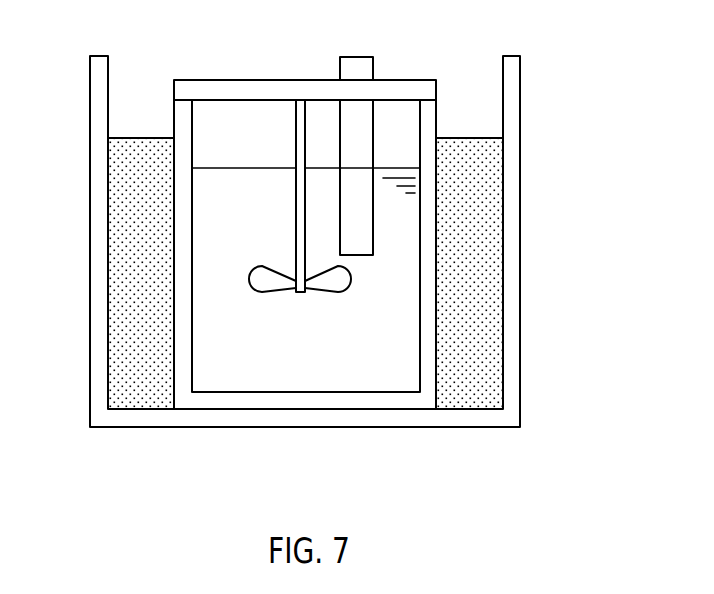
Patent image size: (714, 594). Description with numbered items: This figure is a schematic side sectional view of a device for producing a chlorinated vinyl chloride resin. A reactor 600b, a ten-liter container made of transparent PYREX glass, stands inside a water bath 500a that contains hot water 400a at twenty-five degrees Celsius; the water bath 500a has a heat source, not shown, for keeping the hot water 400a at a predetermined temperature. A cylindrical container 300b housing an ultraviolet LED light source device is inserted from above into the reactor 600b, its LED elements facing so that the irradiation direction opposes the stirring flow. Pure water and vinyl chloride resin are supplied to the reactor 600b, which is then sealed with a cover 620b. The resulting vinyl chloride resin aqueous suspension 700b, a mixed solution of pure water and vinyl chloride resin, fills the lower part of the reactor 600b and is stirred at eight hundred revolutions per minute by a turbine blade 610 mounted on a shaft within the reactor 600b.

The water bath 500a is at (510, 67).
The hot water 400a is at (480, 272).
The vinyl chloride resin aqueous suspension 700b is at (232, 360).
The cylindrical container 300b is at (354, 68).
The cover 620b is at (198, 92).
The reactor 600b is at (428, 121).
The turbine blade 610 is at (342, 292).